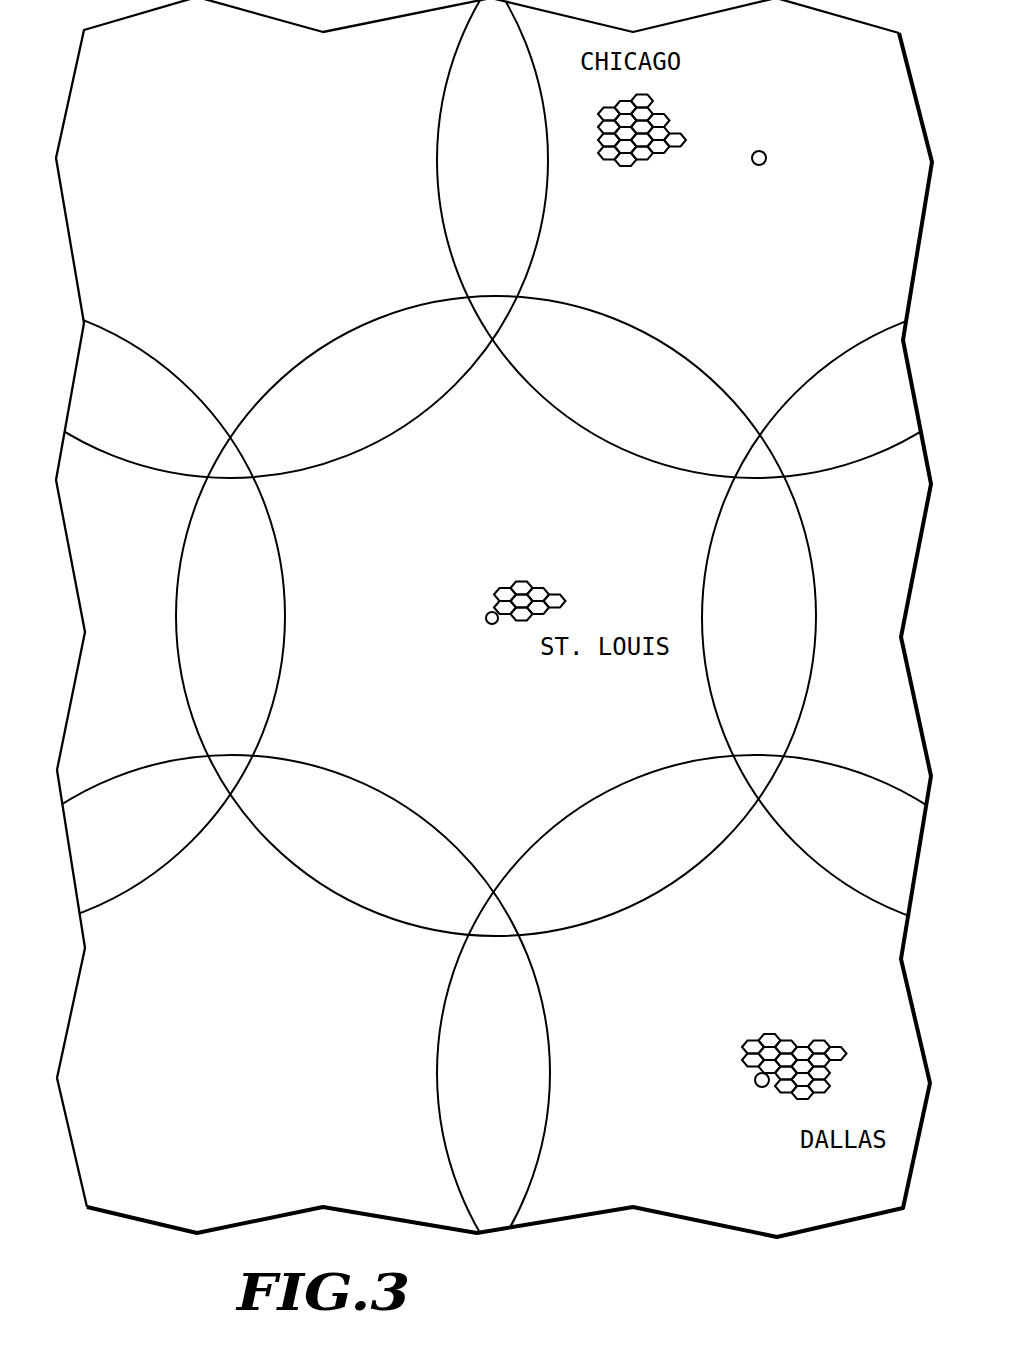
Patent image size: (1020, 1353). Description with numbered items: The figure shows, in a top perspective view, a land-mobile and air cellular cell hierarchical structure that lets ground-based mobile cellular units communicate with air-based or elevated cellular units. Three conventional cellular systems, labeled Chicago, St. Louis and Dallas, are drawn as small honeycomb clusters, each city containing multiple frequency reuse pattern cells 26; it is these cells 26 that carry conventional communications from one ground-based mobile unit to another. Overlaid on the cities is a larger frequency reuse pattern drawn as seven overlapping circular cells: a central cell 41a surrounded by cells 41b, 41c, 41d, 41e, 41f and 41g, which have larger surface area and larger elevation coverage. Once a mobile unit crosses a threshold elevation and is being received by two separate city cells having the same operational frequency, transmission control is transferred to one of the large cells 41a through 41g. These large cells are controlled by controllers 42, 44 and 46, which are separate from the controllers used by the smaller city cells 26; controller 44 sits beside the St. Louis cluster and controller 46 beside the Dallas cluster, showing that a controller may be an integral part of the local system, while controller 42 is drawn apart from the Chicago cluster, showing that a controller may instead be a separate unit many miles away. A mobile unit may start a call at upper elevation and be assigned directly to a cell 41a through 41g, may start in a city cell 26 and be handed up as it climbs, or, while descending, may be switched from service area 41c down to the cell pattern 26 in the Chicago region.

The frequency reuse pattern cells 26 is at (661, 111).
The cell 41a is at (399, 702).
The cell 41b is at (890, 568).
The service area cell 41c is at (791, 287).
The cell 41d is at (272, 214).
The cell 41e is at (145, 562).
The cell 41f is at (254, 1051).
The cell 41g is at (651, 1038).
The controller 42 is at (767, 155).
The controller 44 is at (484, 622).
The controller 46 is at (760, 1088).